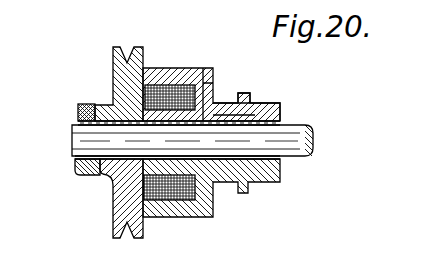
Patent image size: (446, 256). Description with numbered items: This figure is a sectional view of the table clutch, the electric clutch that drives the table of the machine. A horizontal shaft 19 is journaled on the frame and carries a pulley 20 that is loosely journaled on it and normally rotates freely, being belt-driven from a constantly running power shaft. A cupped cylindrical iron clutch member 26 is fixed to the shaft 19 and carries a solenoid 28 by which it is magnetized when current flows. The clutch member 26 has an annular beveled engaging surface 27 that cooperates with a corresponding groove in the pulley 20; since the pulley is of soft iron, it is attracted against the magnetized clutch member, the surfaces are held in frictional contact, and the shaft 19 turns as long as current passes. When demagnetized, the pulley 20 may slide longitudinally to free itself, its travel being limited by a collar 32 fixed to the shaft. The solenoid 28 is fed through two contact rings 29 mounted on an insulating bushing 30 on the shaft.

The horizontal shaft 19 is at (292, 134).
The pulley 20 is at (127, 199).
The clutch member 26 is at (210, 78).
The annular beveled engaging surface 27 is at (134, 73).
The solenoid 28 is at (182, 85).
The contact rings 29 is at (258, 103).
The insulating bushing 30 is at (280, 106).
The collar 32 is at (78, 107).